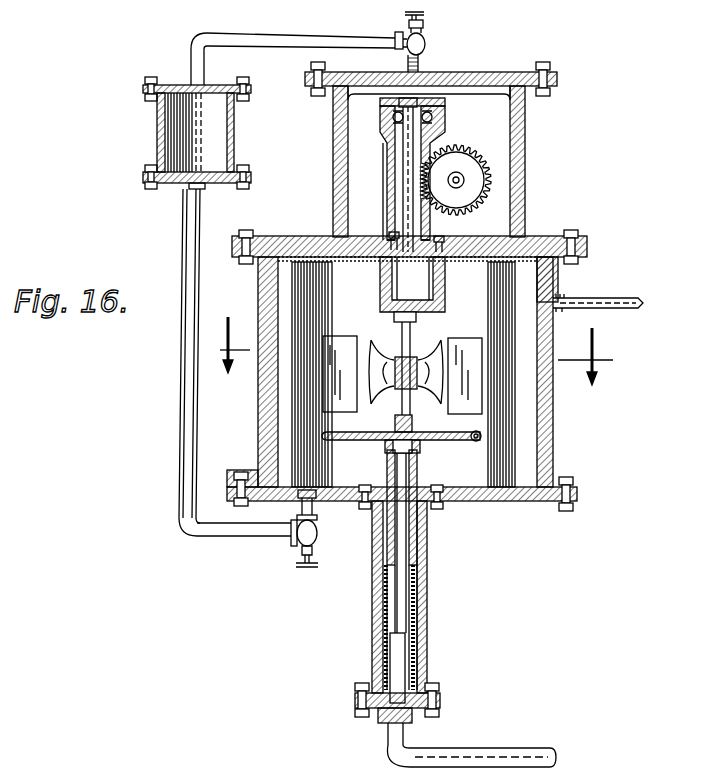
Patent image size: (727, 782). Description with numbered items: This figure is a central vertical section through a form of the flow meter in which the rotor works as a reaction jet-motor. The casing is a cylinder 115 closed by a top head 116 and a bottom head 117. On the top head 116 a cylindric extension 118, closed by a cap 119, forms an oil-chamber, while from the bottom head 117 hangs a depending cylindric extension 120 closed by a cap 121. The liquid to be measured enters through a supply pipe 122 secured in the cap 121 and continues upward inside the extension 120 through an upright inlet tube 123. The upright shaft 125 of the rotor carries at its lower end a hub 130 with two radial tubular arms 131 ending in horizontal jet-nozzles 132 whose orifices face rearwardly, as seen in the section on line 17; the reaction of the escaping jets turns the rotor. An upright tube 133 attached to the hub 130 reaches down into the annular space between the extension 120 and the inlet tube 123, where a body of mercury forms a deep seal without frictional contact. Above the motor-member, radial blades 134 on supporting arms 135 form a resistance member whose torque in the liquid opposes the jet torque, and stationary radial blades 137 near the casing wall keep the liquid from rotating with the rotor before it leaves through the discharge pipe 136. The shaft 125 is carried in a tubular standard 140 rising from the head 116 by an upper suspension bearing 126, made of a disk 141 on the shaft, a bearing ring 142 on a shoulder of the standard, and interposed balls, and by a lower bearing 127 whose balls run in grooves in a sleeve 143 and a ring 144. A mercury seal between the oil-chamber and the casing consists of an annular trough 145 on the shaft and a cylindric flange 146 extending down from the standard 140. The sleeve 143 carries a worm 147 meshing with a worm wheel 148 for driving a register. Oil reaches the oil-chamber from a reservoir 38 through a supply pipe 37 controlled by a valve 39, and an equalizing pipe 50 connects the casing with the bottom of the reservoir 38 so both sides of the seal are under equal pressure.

The supply pipe 37 is at (400, 56).
The oil reservoir 38 is at (157, 125).
The valve 39 is at (420, 38).
The equalizing pipe 50 is at (181, 418).
The section line 17— 17 is at (416, 351).
The cylinder 115 is at (553, 397).
The top head 116 is at (541, 240).
The bottom head 117 is at (518, 503).
The cylindric extension 118 is at (526, 152).
The cap 119 is at (490, 73).
The depending cylindric extension 120 is at (426, 625).
The cap 121 is at (385, 702).
The supply pipe 122 is at (492, 755).
The upright inlet tube 123 is at (406, 578).
The upright shaft 125 is at (411, 344).
The upper bearing 126 is at (437, 108).
The lower bearing 127 is at (443, 241).
The hub 130 is at (413, 433).
The tubular arms 131 is at (365, 441).
The jet-nozzles 132 is at (482, 437).
The upright tube 133 is at (418, 543).
The radial blades 134 is at (402, 375).
The supporting arms 135 is at (398, 355).
The discharge pipe 136 is at (625, 296).
The stationary radial blades 137 is at (312, 289).
The tubular standard 140 is at (388, 185).
The plate or disk 141 is at (424, 108).
The bearing ring 142 is at (430, 121).
The sleeve 143 is at (403, 150).
The ring 144 is at (392, 234).
The annular trough 145 is at (430, 290).
The cylindric flange 146 is at (392, 277).
The worm 147 is at (383, 173).
The worm wheel 148 is at (480, 181).